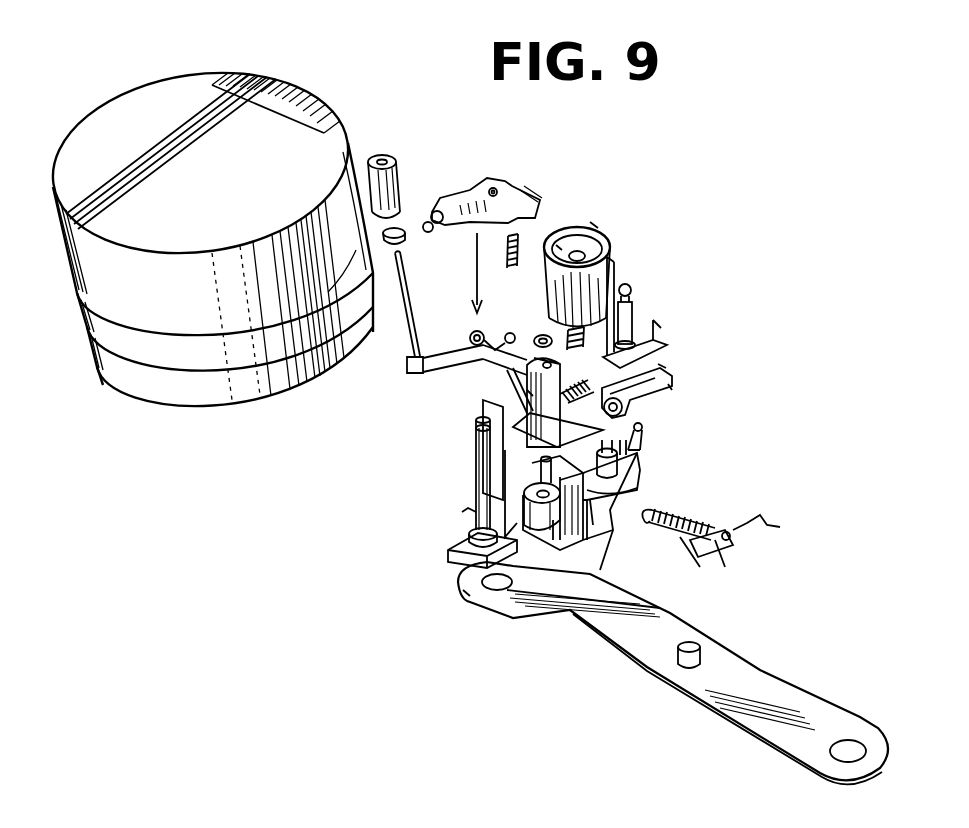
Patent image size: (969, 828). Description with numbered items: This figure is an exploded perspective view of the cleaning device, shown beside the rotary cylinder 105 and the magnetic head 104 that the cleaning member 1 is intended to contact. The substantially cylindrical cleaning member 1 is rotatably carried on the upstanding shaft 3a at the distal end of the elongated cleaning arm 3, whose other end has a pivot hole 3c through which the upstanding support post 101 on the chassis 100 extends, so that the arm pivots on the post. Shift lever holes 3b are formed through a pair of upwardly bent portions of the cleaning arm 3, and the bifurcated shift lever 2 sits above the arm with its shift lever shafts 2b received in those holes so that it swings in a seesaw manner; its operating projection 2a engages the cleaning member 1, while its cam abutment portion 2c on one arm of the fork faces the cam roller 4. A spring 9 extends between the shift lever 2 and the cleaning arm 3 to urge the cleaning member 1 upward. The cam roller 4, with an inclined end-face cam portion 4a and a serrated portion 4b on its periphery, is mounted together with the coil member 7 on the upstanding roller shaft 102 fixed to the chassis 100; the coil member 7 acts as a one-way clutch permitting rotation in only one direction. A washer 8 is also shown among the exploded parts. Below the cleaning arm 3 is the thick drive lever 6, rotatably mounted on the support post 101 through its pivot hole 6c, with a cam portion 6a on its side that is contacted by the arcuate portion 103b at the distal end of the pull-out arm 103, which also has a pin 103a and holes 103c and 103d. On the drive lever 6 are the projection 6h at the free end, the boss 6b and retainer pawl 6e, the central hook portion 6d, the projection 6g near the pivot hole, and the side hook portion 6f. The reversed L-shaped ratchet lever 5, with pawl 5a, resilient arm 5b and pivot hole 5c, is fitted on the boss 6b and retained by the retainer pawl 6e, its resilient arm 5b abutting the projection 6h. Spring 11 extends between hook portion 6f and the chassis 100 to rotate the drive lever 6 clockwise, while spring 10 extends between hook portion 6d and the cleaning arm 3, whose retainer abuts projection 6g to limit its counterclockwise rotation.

The cleaning member 1 is at (408, 168).
The shift lever 2 is at (466, 185).
The operating projection 2a is at (437, 207).
The shift lever shafts 2b is at (494, 188).
The cam abutment portion 2c is at (531, 192).
The cleaning arm 3 is at (497, 380).
The upstanding shaft 3a is at (410, 292).
The shift lever holes 3b is at (471, 335).
The pivot hole 3c is at (530, 393).
The cam roller 4 is at (607, 243).
The end-face cam portion 4a is at (593, 225).
The serrated portion 4b is at (560, 247).
The ratchet lever 5 is at (670, 370).
The pawl 5a is at (663, 360).
The resilient arm 5b is at (670, 390).
The pivot hole 5c is at (650, 408).
The drive lever 6 is at (643, 443).
The cam portion 6a is at (643, 546).
The boss 6b is at (640, 465).
The pivot hole 6c is at (527, 482).
The hook portion 6d is at (546, 457).
The retainer pawl 6e is at (632, 483).
The hook portion 6f is at (595, 522).
The projection 6g is at (555, 528).
The projection 6h is at (643, 430).
The coil member 7 is at (633, 313).
The washer 8 is at (543, 335).
The spring 9 is at (518, 242).
The spring 10 is at (477, 440).
The spring 11 is at (690, 547).
The chassis 100 is at (457, 553).
The support post 101 is at (470, 510).
The roller shaft 102 is at (633, 323).
The pull-out arm 103 is at (697, 710).
The pin 103a is at (672, 660).
The arcuate portion 103b is at (463, 593).
The hole 103c is at (848, 747).
The hole 103d is at (493, 583).
The magnetic head 104 is at (326, 360).
The rotary cylinder 105 is at (243, 80).